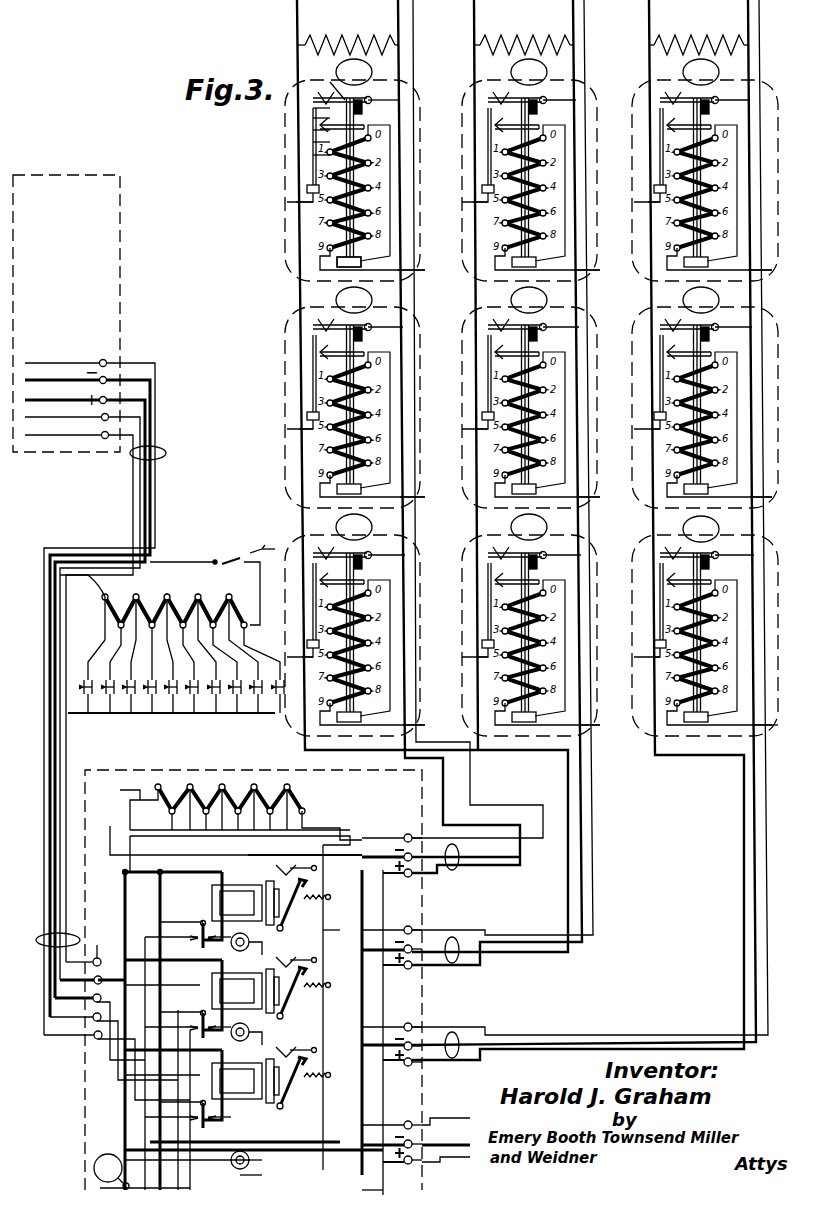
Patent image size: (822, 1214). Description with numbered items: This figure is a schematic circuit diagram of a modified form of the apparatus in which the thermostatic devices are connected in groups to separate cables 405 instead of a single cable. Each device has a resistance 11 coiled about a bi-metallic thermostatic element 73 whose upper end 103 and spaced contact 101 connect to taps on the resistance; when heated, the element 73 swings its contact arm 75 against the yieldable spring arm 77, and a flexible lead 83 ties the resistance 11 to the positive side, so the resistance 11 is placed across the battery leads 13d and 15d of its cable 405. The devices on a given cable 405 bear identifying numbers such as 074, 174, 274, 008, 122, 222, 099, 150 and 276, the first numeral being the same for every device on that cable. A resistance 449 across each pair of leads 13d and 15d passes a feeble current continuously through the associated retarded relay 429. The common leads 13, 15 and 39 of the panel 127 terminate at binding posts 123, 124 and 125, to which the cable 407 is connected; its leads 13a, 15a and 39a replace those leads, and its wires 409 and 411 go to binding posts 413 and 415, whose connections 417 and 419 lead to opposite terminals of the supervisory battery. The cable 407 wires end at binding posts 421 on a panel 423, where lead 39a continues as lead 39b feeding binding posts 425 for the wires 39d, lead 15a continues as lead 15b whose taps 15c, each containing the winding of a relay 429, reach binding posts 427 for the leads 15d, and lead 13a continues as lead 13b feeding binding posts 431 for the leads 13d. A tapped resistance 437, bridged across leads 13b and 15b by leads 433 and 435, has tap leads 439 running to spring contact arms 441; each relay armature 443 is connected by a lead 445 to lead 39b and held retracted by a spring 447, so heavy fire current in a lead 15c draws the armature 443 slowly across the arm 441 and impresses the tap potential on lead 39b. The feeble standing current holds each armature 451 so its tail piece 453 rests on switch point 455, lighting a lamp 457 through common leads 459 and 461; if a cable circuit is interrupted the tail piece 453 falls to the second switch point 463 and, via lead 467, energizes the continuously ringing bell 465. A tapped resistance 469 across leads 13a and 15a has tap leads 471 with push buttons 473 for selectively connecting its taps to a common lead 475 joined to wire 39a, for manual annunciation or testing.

The resistance 449 is at (340, 22).
The switch unit 074 is at (355, 170).
The switch unit 174 is at (531, 170).
The switch unit 274 is at (705, 170).
The switch unit 008 is at (355, 397).
The switch unit 122 is at (531, 397).
The switch unit 222 is at (705, 397).
The switch unit 099 is at (355, 625).
The switch unit 150 is at (531, 625).
The switch unit 276 is at (705, 626).
The contact 101 is at (325, 78).
The upper end of thermostatic element 103 is at (313, 108).
The yieldable spring arm 77 is at (313, 118).
The contact arm 75 is at (313, 130).
The bi-metallic thermostatic element 73 is at (313, 142).
The resistance 11 is at (313, 155).
The flexible lead 83 is at (555, 722).
The negative battery lead of cable 405 15d is at (297, 30).
The wire of cable 405 39d is at (413, 28).
The positive battery lead of cable 405 13d is at (405, 62).
The panel 127 is at (120, 268).
The lead 39 is at (32, 363).
The negative lead 15 is at (55, 380).
The positive lead 13 is at (72, 400).
The binding post 125 is at (108, 360).
The binding post 124 is at (110, 378).
The binding post 123 is at (110, 398).
The lead of cable 407 39a is at (157, 410).
The positive battery lead of cable 407 13a is at (150, 494).
The negative battery lead of cable 407 15a is at (155, 481).
The cable 407 is at (166, 453).
The lead 417 is at (42, 435).
The terminal 419 is at (68, 435).
The binding post 413 is at (102, 437).
The binding post 415 is at (134, 470).
The wire 409 is at (139, 503).
The wire 411 is at (133, 521).
The tapped resistance 469 is at (215, 560).
The tap lead 471 is at (106, 633).
The push button 473 is at (60, 575).
The common lead 475 is at (75, 713).
The tapped resistance 437 is at (160, 784).
The tap lead 439 is at (155, 783).
The lead 435 is at (120, 790).
The lead 433 is at (345, 810).
The wire 39b is at (253, 965).
The tap 15c is at (200, 852).
The lead 15b is at (135, 905).
The lead 13b is at (130, 1102).
The retarded relay 429 is at (215, 905).
The lead 445 is at (316, 1017).
The spring contact arm 441 is at (305, 958).
The spring 447 is at (278, 1040).
The armature 443 is at (310, 1100).
The armature 451 is at (280, 1108).
The tail piece 453 is at (237, 1153).
The switch point 455 is at (237, 1171).
The lamp 457 is at (267, 1164).
The common lead 459 is at (160, 938).
The common lead 461 is at (110, 1067).
The second switch point 463 is at (210, 1161).
The continuously ringing bell 465 is at (94, 1165).
The lead 467 is at (135, 1101).
The binding post 421 is at (40, 972).
The panel 423 is at (118, 1084).
The binding post 425 is at (410, 832).
The binding post 427 is at (415, 855).
The binding post 431 is at (415, 875).
The cable 405 is at (458, 866).